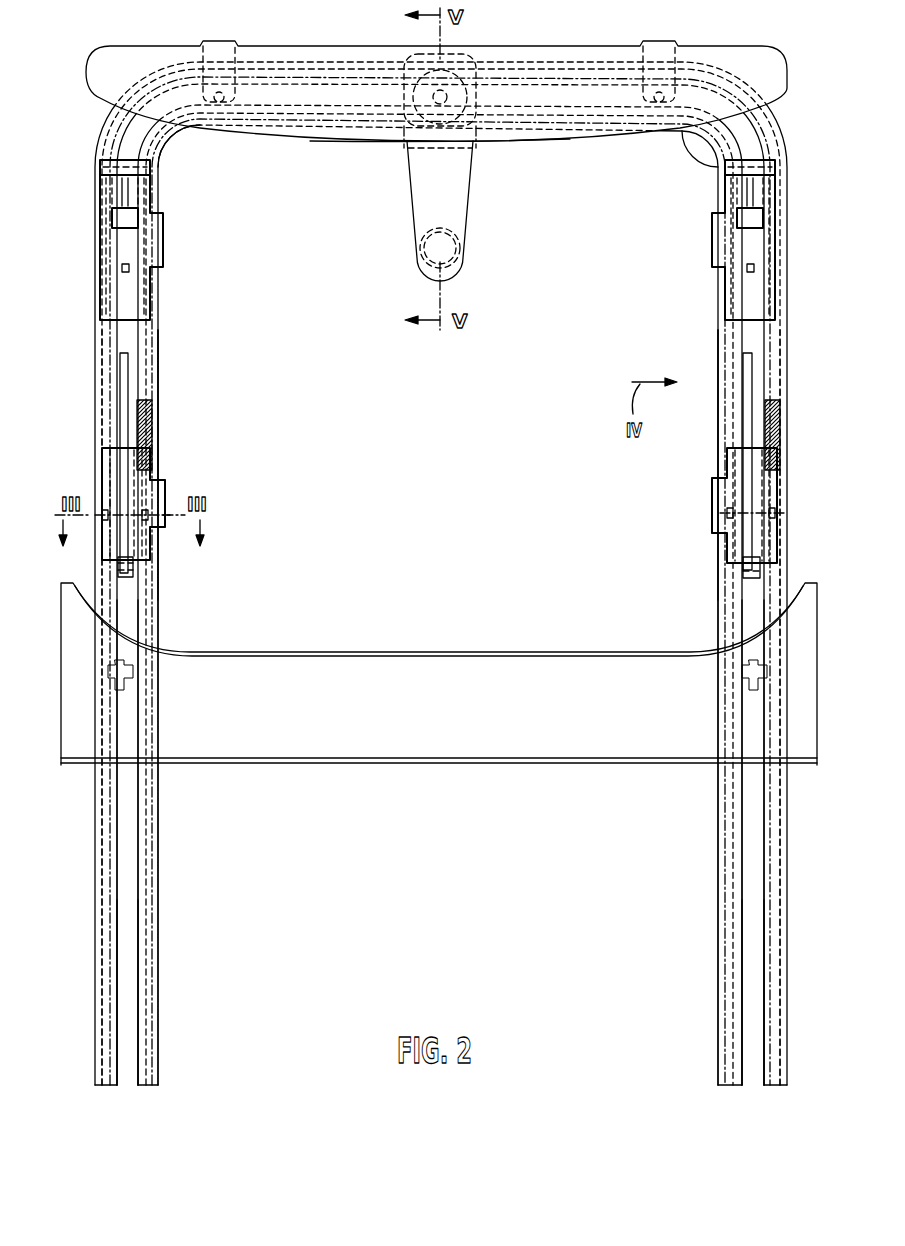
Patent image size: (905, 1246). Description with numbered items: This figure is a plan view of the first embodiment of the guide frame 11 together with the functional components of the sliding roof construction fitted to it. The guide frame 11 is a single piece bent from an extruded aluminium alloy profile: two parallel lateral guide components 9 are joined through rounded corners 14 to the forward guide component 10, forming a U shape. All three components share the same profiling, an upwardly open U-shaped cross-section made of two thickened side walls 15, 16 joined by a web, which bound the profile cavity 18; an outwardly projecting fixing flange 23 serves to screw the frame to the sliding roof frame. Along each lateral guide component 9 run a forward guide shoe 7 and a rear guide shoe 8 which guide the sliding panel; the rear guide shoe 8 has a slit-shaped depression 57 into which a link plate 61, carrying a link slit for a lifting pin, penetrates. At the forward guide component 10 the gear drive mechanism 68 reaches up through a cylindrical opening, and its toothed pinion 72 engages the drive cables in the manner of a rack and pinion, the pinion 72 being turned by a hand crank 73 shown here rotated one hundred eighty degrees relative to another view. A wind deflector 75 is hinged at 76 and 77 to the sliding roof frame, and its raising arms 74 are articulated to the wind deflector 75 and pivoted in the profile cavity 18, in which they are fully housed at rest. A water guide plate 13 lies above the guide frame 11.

The forward guide shoe 7 is at (168, 221).
The rear guide shoe 8 is at (167, 481).
The lateral guide component 9 is at (160, 812).
The forward guide component 10 is at (288, 62).
The guide frame 11 is at (160, 598).
The water guide plate 13 is at (442, 708).
The rounded corner 14 is at (113, 117).
The inner side wall 15 is at (137, 857).
The side wall 16 is at (118, 882).
The profile cavity 18 is at (128, 927).
The fixing flange 23 is at (98, 809).
The slit-shaped depression 57 is at (122, 462).
The link plate 61 is at (122, 404).
The gear drive mechanism 68 is at (392, 98).
The toothed pinion 72 is at (455, 97).
The hand crank 73 is at (460, 177).
The raising arm 74 is at (213, 137).
The wind deflector 75 is at (370, 141).
The hinge 76 is at (215, 43).
The hinge 77 is at (657, 43).